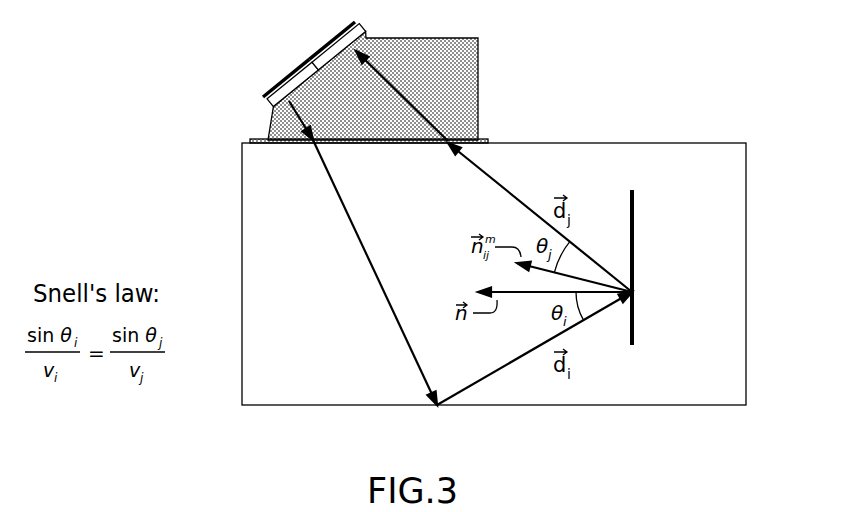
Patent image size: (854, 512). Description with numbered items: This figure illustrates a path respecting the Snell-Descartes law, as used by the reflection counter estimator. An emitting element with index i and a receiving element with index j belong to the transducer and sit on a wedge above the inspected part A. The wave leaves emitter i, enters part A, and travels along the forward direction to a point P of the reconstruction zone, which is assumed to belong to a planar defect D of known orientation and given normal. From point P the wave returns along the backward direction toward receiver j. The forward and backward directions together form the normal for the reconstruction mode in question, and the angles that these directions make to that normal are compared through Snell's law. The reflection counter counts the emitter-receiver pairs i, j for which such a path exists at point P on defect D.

The part A is at (280, 387).
The planar defect D is at (634, 230).
The point of the reconstruction zone P is at (648, 292).
The emitting-element index i is at (244, 83).
The receiving-element index j is at (294, 38).